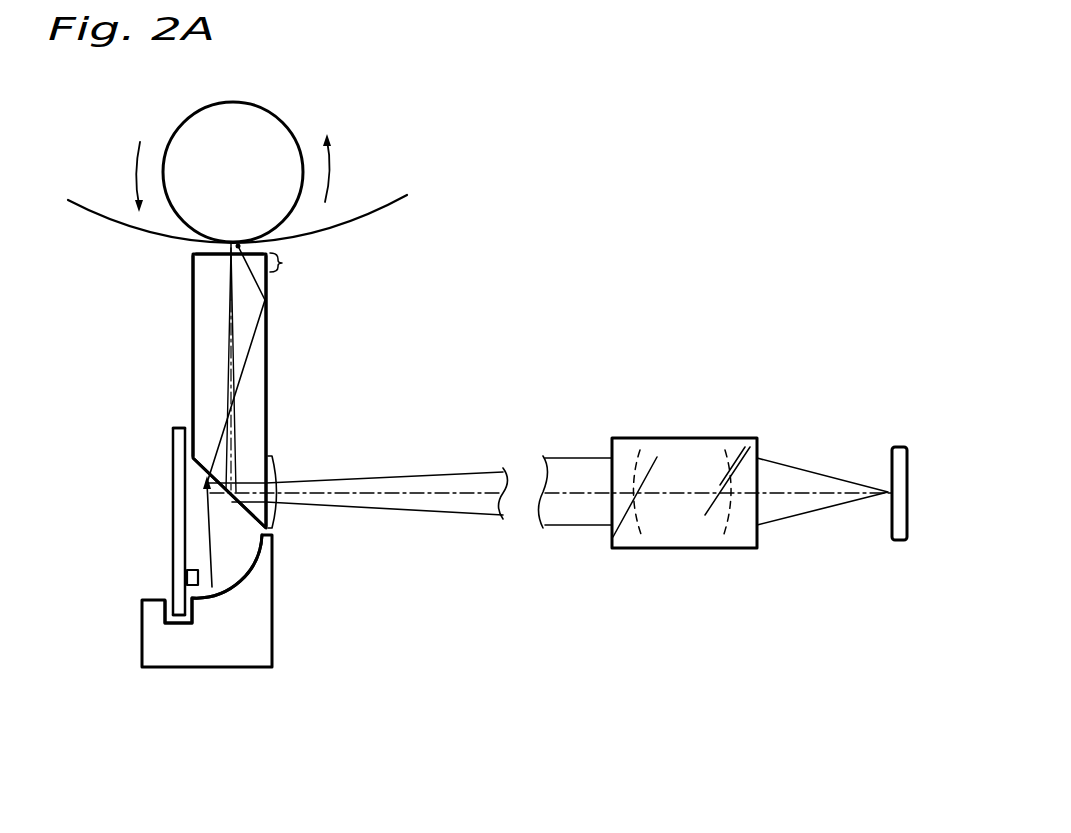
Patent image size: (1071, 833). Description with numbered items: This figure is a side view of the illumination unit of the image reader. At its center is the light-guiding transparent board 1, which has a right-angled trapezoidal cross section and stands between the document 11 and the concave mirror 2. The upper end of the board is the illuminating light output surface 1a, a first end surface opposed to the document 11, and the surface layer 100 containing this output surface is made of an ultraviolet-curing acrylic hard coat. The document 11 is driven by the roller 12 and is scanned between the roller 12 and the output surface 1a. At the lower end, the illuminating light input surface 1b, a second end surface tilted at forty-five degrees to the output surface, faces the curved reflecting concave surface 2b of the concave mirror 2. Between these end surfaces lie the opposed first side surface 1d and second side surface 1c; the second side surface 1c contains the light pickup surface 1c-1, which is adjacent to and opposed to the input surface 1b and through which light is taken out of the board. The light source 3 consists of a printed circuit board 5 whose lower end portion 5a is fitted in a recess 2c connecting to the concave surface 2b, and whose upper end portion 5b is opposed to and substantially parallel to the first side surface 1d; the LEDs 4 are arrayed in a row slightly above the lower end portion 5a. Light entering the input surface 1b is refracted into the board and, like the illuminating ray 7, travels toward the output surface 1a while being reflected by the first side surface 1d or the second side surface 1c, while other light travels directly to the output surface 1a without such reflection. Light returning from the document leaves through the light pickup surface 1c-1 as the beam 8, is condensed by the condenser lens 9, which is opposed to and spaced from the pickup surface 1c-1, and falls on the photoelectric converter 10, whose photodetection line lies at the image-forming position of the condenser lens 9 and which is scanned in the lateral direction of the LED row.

The light-guiding transparent board 1 is at (185, 297).
The illuminating light output surface 1a is at (213, 248).
The illuminating light input surface 1b is at (272, 550).
The second side surface 1c is at (268, 397).
The light pickup surface 1c-1 is at (281, 480).
The first side surface 1d is at (192, 330).
The concave mirror 2 is at (274, 642).
The reflecting concave surface 2b is at (223, 568).
The recess 2c is at (183, 625).
The light source 3 is at (92, 440).
The LEDs 4 is at (187, 578).
The printed circuit board 5 is at (164, 451).
The lower end portion 5a is at (166, 607).
The upper end portion 5b is at (172, 432).
The illuminating ray 7 is at (248, 357).
The reflected light beam 8 is at (474, 472).
The condenser lens 9 is at (683, 438).
The photoelectric converter 10 is at (897, 448).
The document 11 is at (377, 208).
The roller 12 is at (273, 124).
The surface layer 100 is at (284, 262).